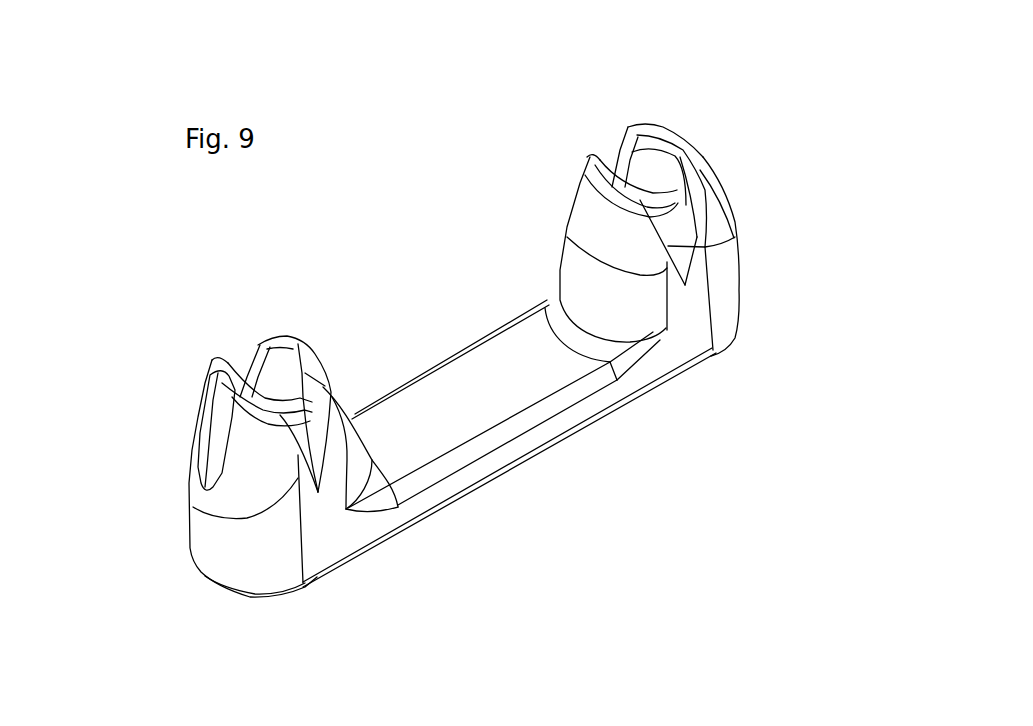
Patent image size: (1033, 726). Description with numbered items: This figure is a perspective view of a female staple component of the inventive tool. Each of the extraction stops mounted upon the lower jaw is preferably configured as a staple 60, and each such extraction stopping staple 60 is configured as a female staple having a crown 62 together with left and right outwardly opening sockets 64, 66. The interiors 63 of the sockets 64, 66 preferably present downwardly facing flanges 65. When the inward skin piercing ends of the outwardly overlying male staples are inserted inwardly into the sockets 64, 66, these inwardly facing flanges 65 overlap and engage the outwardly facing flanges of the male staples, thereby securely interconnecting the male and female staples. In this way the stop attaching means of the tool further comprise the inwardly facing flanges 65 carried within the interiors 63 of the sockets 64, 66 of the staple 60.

The staple 60 is at (519, 514).
The crown 62 is at (462, 377).
The interiors of the sockets 63 is at (287, 373).
The left outwardly opening socket 64 is at (220, 432).
The flanges 65 is at (627, 150).
The right outwardly opening socket 66 is at (595, 213).